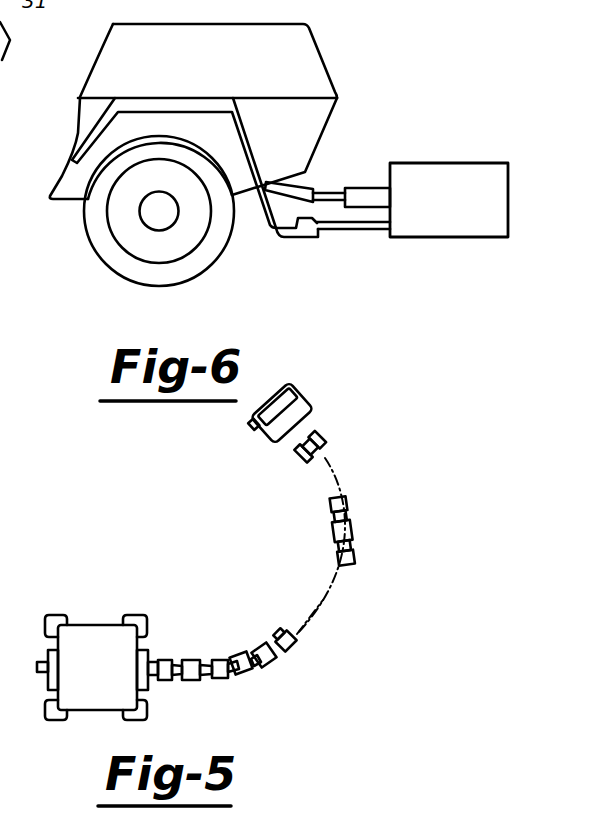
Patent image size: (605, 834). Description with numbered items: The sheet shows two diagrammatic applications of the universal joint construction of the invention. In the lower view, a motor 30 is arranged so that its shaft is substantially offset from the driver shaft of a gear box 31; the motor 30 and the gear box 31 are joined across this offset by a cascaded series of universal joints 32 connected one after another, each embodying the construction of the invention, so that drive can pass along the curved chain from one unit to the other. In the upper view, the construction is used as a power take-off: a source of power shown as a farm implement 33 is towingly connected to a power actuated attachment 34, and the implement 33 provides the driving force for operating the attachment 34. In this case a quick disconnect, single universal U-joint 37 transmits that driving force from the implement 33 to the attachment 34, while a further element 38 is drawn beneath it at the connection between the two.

In FIG. 5, the motor 30 is at (88, 703).
In FIG. 5, the gear box 31 is at (306, 386).
In FIG. 5, the universal joints 32 is at (275, 666).
In FIG. 6, the farm implement 33 is at (197, 73).
In FIG. 6, the power actuated attachment 34 is at (446, 162).
In FIG. 6, the quick disconnect single universal U-joint 37 is at (331, 187).
In FIG. 6, the lower support pipe 38 is at (351, 237).